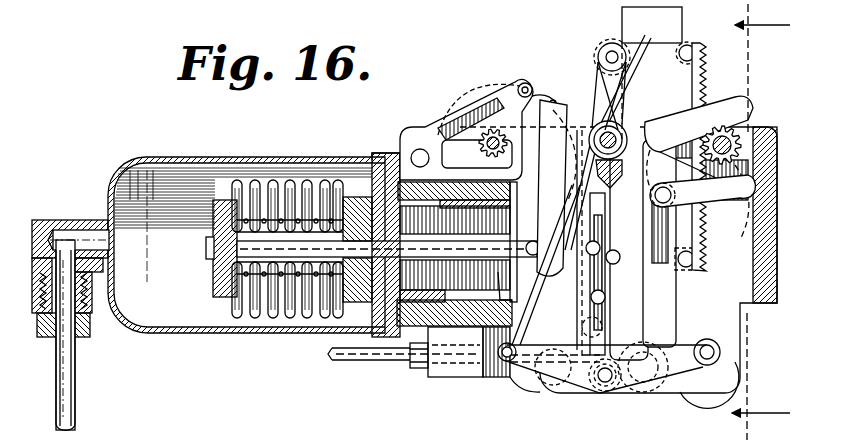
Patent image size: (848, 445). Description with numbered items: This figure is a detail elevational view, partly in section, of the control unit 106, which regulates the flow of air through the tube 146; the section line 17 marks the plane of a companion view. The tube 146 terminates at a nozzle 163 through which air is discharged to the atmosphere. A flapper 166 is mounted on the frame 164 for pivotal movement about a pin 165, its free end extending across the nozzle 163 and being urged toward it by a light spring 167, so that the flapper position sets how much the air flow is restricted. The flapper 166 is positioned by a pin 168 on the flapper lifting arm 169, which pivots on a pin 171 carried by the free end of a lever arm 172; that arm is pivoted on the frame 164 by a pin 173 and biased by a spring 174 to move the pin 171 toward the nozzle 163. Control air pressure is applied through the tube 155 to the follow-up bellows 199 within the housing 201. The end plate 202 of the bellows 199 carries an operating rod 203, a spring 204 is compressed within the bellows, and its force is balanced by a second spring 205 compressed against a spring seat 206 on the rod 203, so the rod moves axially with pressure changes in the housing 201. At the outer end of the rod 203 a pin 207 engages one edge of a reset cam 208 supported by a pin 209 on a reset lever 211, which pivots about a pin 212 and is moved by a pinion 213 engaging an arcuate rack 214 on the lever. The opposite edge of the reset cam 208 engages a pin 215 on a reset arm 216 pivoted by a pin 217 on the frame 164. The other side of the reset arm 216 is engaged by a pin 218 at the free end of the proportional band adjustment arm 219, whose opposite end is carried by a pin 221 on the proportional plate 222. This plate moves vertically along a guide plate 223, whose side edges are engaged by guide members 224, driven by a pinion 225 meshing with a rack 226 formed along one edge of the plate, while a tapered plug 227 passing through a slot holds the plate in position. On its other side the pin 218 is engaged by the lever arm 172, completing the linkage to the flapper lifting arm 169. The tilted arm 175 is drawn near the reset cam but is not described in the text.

The control unit 106 is at (281, 155).
The tube 146 is at (355, 362).
The tube 155 is at (80, 416).
The nozzle 163 is at (578, 395).
The frame 164 is at (727, 320).
The pin 165 is at (602, 131).
The flapper 166 is at (660, 300).
The light spring 167 is at (620, 112).
The pin 168 is at (592, 299).
The flapper lifting arm 169 is at (562, 390).
The pin 171 is at (606, 384).
The lever arm 172 is at (643, 317).
The pin 173 is at (603, 120).
The spring 174 is at (625, 98).
The lever 175 is at (555, 216).
The follow-up bellows 199 is at (232, 320).
The housing 201 is at (203, 157).
The end plate 202 is at (213, 262).
The operating rod 203 is at (206, 249).
The spring 204 is at (290, 320).
The second spring 205 is at (440, 292).
The spring seat 206 is at (500, 274).
The pin 207 is at (533, 241).
The reset cam 208 is at (553, 100).
The pin 209 is at (520, 84).
The reset lever 211 is at (452, 122).
The pin 212 is at (414, 152).
The pinion 213 is at (480, 147).
The arcuate rack 214 is at (495, 113).
The pin 215 is at (585, 282).
The reset arm 216 is at (575, 323).
The pin 217 is at (600, 328).
The pin 218 is at (617, 263).
The proportional band adjustment arm 219 is at (600, 80).
The pin 221 is at (611, 50).
The proportional plate 222 is at (693, 77).
The guide plate 223 is at (672, 20).
The guide members 224 is at (700, 44).
The pinion 225 is at (724, 128).
The rack 226 is at (701, 233).
The tapered plug 227 is at (677, 200).
The section line 17 is at (761, 222).